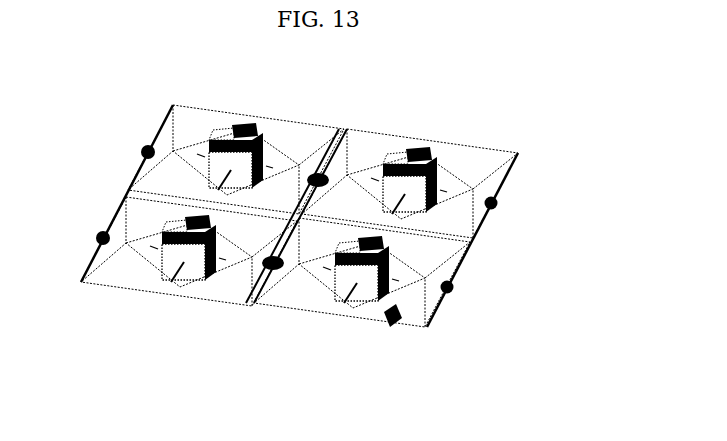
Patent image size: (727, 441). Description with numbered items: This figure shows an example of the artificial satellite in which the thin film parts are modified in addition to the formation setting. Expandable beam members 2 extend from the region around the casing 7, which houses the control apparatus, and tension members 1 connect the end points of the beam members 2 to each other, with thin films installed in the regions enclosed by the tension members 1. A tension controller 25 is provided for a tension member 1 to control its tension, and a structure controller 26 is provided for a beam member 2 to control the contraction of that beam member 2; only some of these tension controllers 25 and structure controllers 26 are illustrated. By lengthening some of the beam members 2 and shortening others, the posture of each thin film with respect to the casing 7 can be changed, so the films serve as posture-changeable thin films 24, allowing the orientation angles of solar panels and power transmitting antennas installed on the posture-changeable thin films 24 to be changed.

The tension member 1 is at (298, 257).
The beam member 2 is at (482, 223).
The casing 7 is at (333, 290).
The posture-changeable thin film 24 is at (487, 160).
The tension controller 25 is at (390, 318).
The structure controller 26 is at (495, 203).